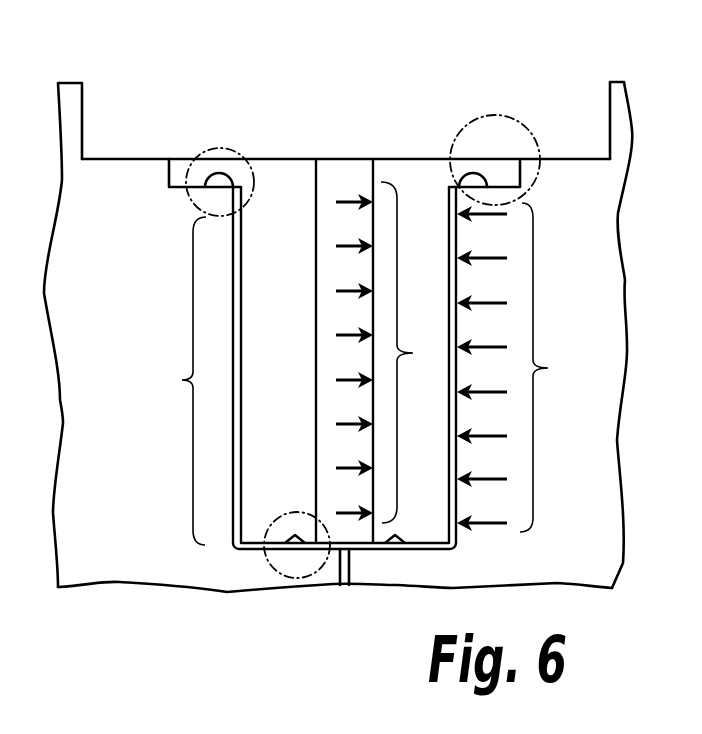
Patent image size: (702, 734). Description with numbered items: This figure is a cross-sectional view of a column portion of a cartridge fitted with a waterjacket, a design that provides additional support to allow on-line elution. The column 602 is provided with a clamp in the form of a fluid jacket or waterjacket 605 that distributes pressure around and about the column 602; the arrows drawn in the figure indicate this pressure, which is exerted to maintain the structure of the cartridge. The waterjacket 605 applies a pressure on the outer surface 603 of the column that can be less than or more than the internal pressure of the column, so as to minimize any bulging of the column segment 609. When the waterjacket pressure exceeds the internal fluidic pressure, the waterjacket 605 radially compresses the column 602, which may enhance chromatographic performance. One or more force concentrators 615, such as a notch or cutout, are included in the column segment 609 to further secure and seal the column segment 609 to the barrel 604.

The barrel 604 is at (548, 120).
The force concentrator 615 is at (212, 148).
The column segment 609 is at (169, 381).
The column 602 is at (328, 405).
The waterjacket 605 is at (523, 367).
The outer surface 603 is at (453, 505).